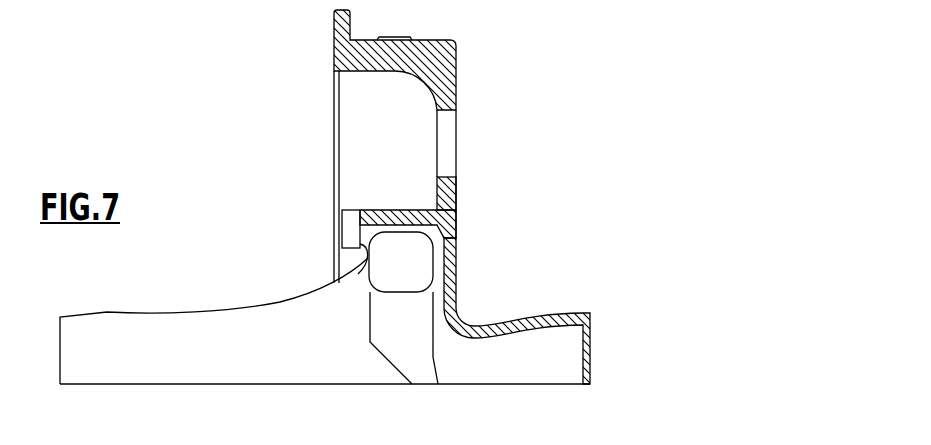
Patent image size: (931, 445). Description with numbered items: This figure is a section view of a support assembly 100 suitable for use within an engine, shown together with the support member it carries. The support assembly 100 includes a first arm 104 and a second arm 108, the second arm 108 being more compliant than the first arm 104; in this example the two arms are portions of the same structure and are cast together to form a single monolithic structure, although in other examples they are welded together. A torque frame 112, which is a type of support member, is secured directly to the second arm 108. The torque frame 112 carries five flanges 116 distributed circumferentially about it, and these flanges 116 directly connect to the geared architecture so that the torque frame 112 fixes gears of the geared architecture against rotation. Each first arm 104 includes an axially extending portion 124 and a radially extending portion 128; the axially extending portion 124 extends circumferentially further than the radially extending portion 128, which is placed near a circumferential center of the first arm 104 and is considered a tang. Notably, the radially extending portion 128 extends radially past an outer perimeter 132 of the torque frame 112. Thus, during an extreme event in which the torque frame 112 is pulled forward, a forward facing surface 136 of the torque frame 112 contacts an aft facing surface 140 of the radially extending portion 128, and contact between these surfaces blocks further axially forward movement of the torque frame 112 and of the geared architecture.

The support assembly 100 is at (458, 67).
The first arm 104 is at (407, 210).
The second arm 108 is at (557, 313).
The torque frame 112 is at (402, 345).
The flange 116 is at (188, 348).
The axially extending portion 124 is at (456, 185).
The radially extending portion 128 is at (345, 222).
The outer perimeter 132 is at (457, 215).
The forward facing surface 136 is at (392, 292).
The aft facing surface 140 is at (352, 268).